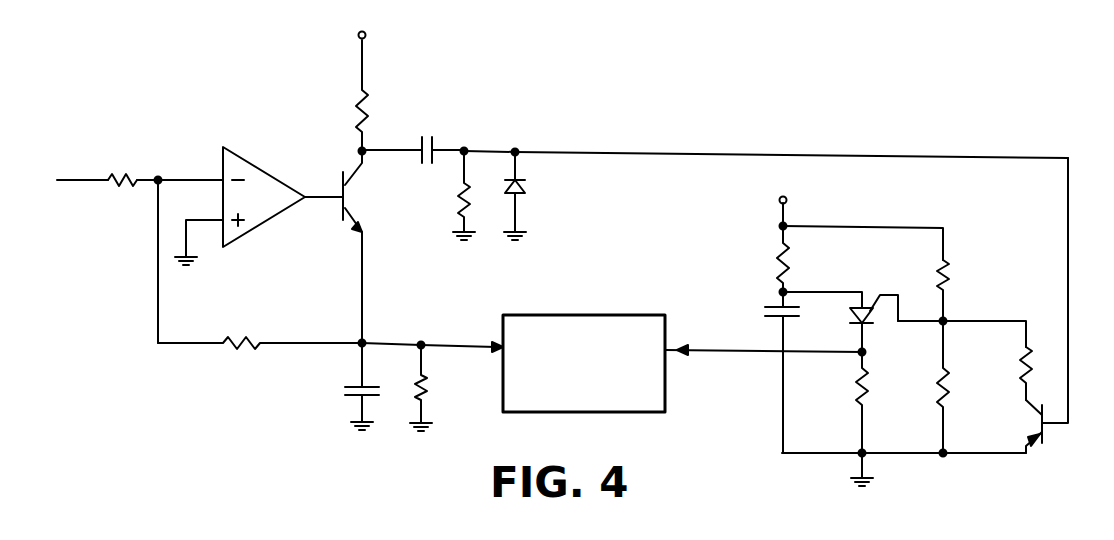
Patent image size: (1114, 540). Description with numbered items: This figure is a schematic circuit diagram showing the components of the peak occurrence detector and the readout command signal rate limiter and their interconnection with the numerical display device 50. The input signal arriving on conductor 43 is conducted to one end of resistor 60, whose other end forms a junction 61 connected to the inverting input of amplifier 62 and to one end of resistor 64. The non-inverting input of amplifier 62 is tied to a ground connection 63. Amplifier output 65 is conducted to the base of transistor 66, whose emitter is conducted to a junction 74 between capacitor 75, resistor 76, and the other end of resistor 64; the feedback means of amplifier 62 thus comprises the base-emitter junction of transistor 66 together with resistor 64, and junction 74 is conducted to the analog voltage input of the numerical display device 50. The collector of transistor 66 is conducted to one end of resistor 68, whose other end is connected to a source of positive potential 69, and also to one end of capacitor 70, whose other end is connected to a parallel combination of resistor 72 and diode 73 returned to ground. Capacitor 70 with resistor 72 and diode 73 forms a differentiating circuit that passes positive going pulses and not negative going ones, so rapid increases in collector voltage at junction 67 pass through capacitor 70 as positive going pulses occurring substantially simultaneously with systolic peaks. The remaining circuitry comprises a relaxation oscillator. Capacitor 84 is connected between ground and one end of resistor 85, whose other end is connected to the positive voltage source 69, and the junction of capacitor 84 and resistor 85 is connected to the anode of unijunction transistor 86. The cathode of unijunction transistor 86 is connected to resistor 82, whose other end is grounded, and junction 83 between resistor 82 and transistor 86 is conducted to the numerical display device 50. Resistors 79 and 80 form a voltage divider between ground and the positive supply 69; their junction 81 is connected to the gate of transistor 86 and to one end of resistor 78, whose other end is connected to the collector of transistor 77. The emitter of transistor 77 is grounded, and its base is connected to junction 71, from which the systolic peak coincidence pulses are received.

The conductor 43 is at (62, 180).
The numerical display device 50 is at (608, 412).
The resistor 60 is at (120, 172).
The junction 61 is at (158, 176).
The amplifier 62 is at (255, 167).
The ground connection 63 is at (200, 226).
The resistor 64 is at (244, 350).
The amplifier output 65 is at (323, 199).
The transistor 66 is at (350, 192).
The junction 67 is at (367, 148).
The resistor 68 is at (367, 102).
The source of positive potential 69 is at (366, 33).
The capacitor 70 is at (432, 141).
The junction 71 is at (469, 148).
The resistor 72 is at (458, 197).
The diode 73 is at (526, 187).
The junction 74 is at (366, 340).
The capacitor 75 is at (342, 388).
The resistor 76 is at (427, 385).
The transistor 77 is at (1036, 421).
The resistor 78 is at (1019, 365).
The resistor 79 is at (937, 396).
The resistor 80 is at (950, 276).
The junction 81 is at (945, 318).
The resistor 82 is at (855, 401).
The junction 83 is at (858, 358).
The capacitor 84 is at (760, 310).
The resistor 85 is at (790, 262).
The unijunction transistor 86 is at (848, 318).